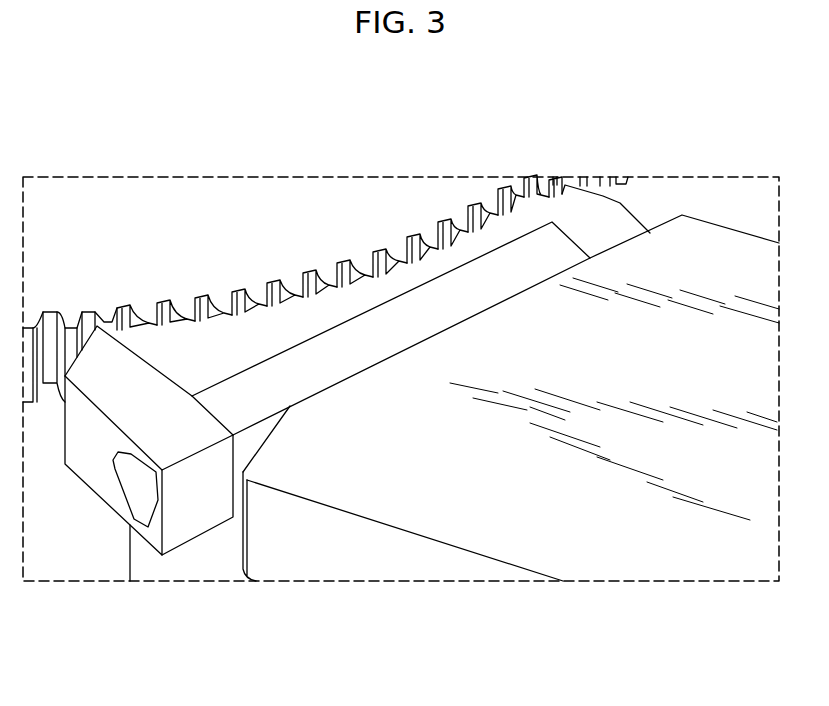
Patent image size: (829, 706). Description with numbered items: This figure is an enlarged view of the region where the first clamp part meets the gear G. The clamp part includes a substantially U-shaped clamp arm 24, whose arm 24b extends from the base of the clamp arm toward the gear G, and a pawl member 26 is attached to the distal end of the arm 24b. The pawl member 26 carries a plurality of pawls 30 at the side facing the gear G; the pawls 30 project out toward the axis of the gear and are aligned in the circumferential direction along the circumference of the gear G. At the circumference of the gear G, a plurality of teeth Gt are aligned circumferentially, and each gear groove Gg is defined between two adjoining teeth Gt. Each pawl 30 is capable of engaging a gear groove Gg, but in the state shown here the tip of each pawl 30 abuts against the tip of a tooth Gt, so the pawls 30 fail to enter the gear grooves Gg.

The clamp arm 24 is at (349, 558).
The arm 24b is at (517, 512).
The pawl member 26 is at (149, 350).
The pawls 30 is at (500, 220).
The gear G is at (336, 253).
The teeth Gt is at (222, 297).
The gear grooves Gg is at (202, 322).